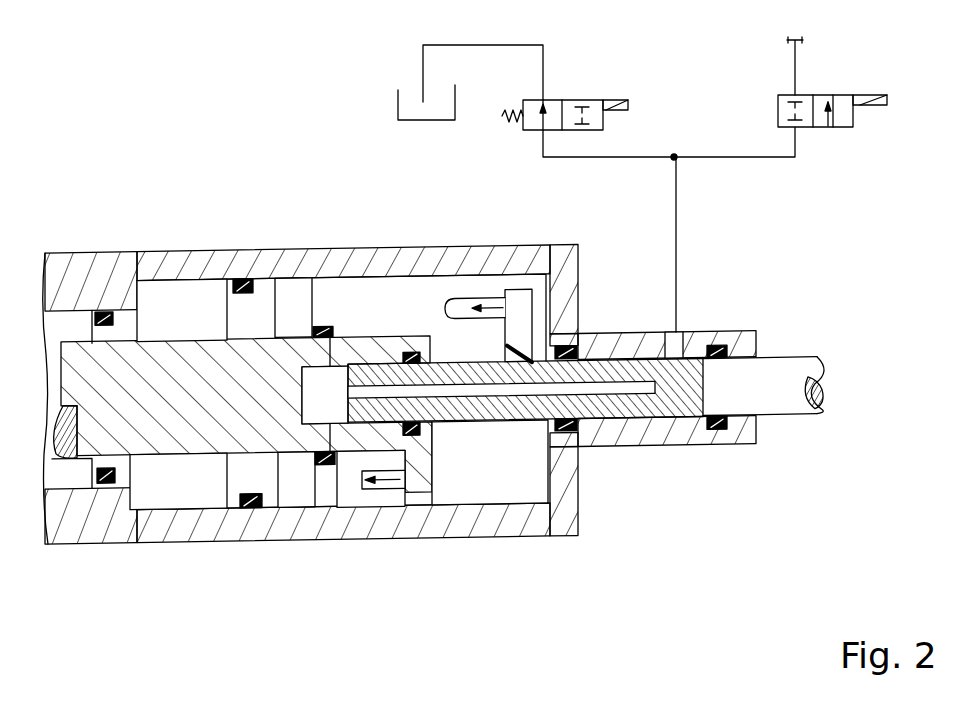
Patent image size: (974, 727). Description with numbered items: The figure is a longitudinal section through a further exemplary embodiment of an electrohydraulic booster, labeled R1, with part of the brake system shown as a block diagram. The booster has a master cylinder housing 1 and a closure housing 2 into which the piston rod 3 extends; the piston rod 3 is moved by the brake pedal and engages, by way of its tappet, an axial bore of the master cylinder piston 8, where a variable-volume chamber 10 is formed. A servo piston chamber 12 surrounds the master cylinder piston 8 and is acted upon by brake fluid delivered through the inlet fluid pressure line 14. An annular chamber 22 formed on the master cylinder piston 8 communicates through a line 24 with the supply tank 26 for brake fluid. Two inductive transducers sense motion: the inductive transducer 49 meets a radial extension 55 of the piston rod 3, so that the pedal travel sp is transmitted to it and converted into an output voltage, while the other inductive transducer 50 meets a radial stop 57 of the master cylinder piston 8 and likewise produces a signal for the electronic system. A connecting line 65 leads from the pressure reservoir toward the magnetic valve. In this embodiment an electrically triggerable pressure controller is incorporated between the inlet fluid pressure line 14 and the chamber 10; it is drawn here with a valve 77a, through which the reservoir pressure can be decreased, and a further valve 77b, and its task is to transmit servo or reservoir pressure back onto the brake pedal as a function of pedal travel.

The master cylinder housing 1 is at (92, 540).
The closure housing 2 is at (552, 524).
The piston rod 3 is at (772, 378).
The master cylinder piston 8 is at (212, 441).
The variable-volume chamber 10 is at (323, 383).
The servo piston chamber 12 is at (303, 497).
The inlet fluid pressure line 14 is at (292, 197).
The annular chamber 22 is at (176, 500).
The line 24 is at (143, 195).
The supply tank 26 is at (400, 104).
The inductive transducer 49 is at (467, 298).
The inductive transducer 50 is at (390, 482).
The radial extension 55 is at (530, 322).
The radial stop 57 is at (425, 479).
The connecting line 65 is at (797, 68).
The valve 77a is at (843, 127).
The solenoid valve 77b is at (563, 100).
The return direction R1 is at (825, 281).
The pedal travel sp is at (842, 394).